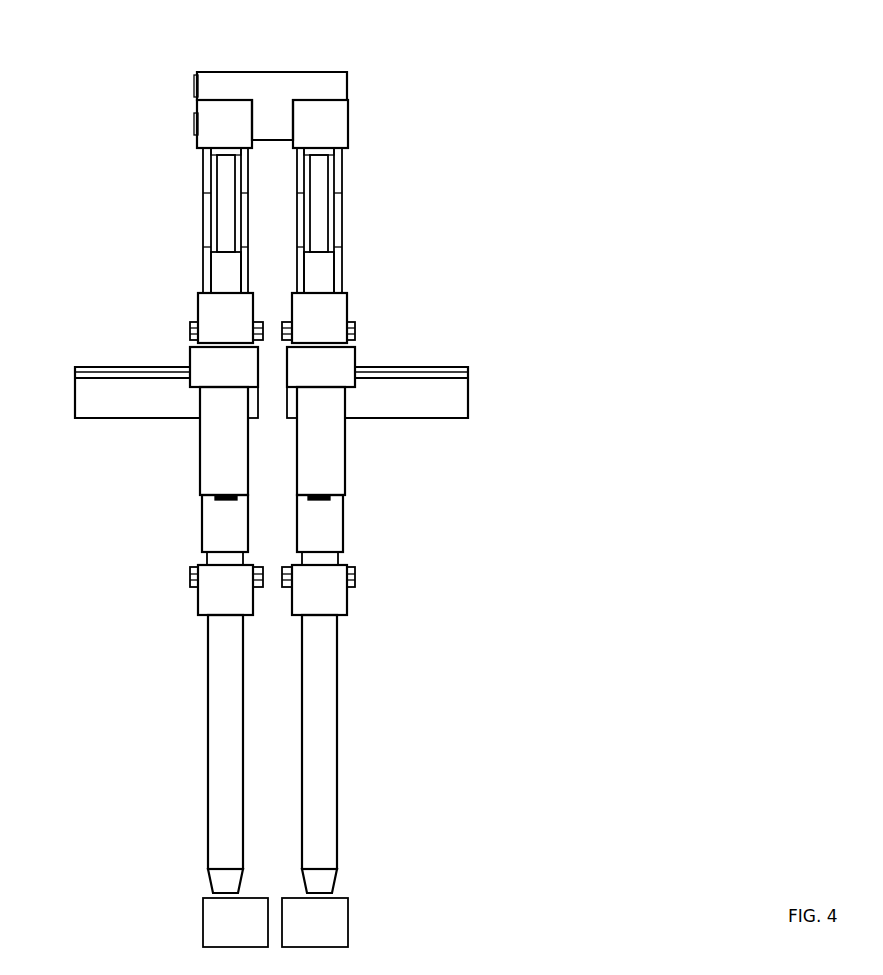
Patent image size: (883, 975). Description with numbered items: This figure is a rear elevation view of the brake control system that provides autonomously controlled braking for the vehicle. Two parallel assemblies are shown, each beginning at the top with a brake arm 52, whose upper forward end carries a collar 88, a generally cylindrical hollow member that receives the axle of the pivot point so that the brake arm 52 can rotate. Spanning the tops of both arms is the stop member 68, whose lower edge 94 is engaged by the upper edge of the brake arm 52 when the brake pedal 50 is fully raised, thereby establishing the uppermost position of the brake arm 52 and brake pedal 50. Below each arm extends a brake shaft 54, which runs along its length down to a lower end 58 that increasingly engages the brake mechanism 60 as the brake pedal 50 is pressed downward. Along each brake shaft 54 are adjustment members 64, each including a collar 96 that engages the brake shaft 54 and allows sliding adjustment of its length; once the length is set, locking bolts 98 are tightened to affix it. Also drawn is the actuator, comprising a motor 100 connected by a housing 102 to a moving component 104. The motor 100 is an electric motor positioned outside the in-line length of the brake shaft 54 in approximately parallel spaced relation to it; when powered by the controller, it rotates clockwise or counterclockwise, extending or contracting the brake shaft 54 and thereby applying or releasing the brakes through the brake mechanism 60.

The brake pedal 50 is at (75, 367).
The brake arm 52 is at (201, 204).
The brake shaft 54 is at (203, 778).
The lower end 58 is at (213, 892).
The brake mechanism 60 is at (213, 928).
The adjustment member 64 is at (195, 305).
The stop member 68 is at (345, 72).
The collar 88 is at (213, 130).
The lower edge 94 is at (270, 141).
The collar 96 is at (200, 293).
The locking bolts 98 is at (190, 332).
The motor 100 is at (213, 447).
The housing 102 is at (200, 356).
The moving component 104 is at (213, 523).